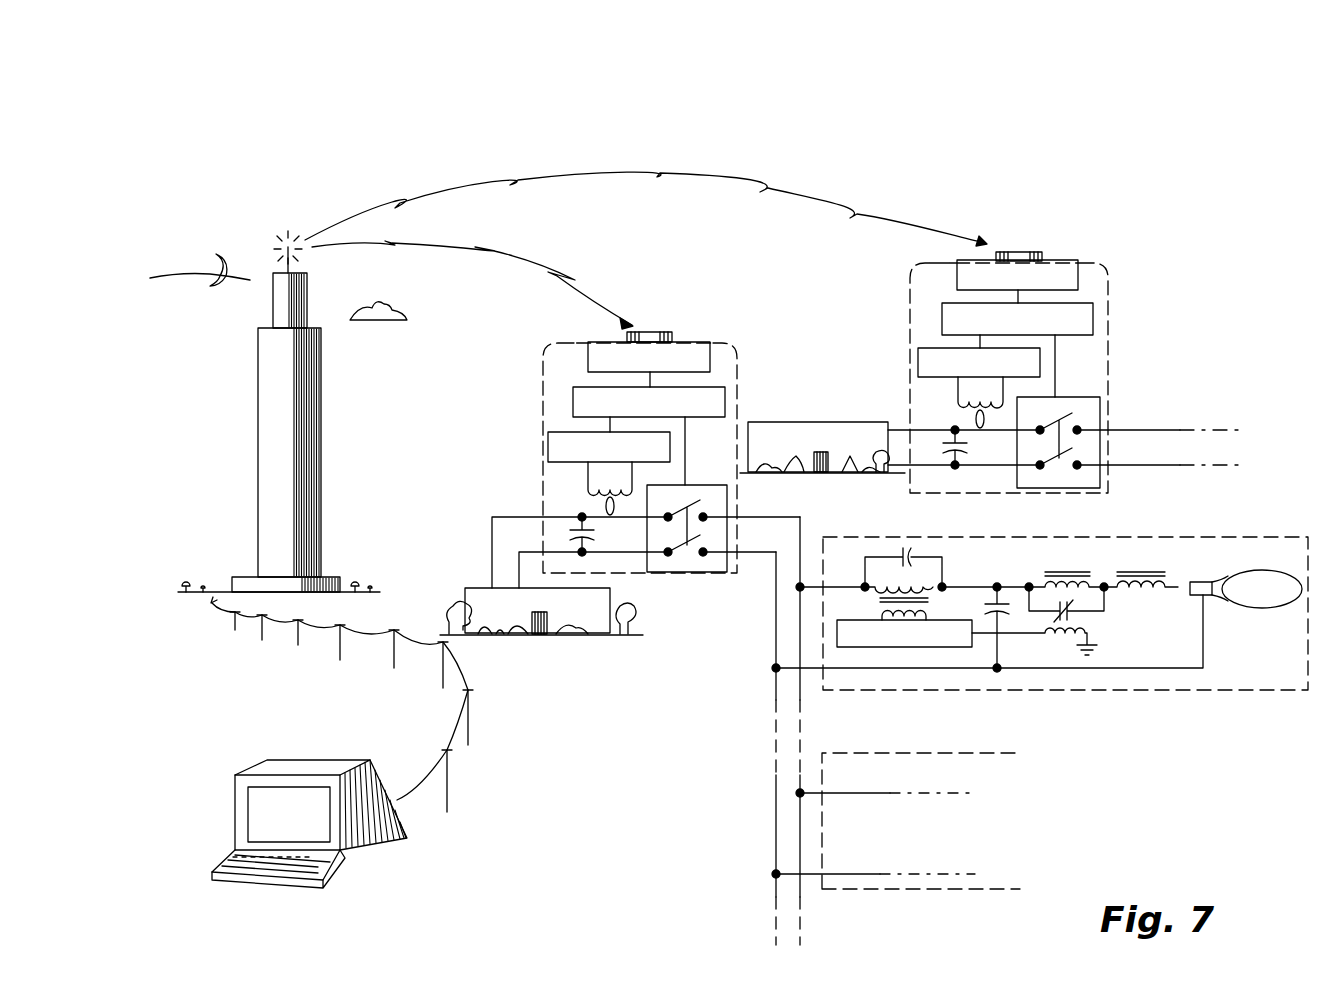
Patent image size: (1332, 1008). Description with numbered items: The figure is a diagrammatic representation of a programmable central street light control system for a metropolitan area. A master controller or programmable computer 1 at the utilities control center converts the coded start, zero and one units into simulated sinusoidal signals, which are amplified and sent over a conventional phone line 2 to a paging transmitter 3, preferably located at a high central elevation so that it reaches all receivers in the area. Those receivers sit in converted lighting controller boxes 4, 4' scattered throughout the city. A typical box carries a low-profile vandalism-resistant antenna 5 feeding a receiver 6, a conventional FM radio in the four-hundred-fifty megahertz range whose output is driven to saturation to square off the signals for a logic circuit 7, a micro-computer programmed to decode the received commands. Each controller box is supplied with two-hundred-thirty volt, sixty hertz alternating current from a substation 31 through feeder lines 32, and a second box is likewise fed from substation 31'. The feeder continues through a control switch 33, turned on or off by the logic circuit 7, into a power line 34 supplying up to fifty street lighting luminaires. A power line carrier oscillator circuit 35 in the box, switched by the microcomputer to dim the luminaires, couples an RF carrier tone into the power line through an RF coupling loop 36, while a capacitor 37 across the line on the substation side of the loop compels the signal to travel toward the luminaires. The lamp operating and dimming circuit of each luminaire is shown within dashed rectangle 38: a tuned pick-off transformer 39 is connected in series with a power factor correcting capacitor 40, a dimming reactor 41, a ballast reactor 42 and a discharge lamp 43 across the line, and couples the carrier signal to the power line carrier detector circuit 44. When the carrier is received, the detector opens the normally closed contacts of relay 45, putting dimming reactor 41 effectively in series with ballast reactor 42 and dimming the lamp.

The programmable computer 1 is at (292, 758).
The phone line 2 is at (367, 628).
The paging transmitter 3 is at (300, 270).
The lighting controller box 4 is at (624, 452).
The lighting controller box 4' is at (1051, 372).
The vandalism-resistant antenna 5 is at (662, 335).
The receiver 6 is at (587, 354).
The logic circuit 7 is at (573, 398).
The substation 31 is at (531, 603).
The substation 31' is at (822, 432).
The feeder lines 32 is at (517, 556).
The control switch 33 is at (681, 542).
The power line 34 is at (796, 627).
The power line carrier oscillator circuit 35 is at (548, 447).
The RF coupling loop 36 is at (589, 492).
The capacitor 37 is at (594, 539).
The dashed rectangle 38 is at (1072, 690).
The tuned pick-off transformer 39 is at (876, 600).
The power factor correcting capacitor 40 is at (985, 610).
The dimming reactor 41 is at (1037, 572).
The ballast reactor 42 is at (1163, 574).
The discharge lamp 43 is at (1254, 609).
The power line carrier detector circuit 44 is at (855, 649).
The relay 45 is at (1075, 616).